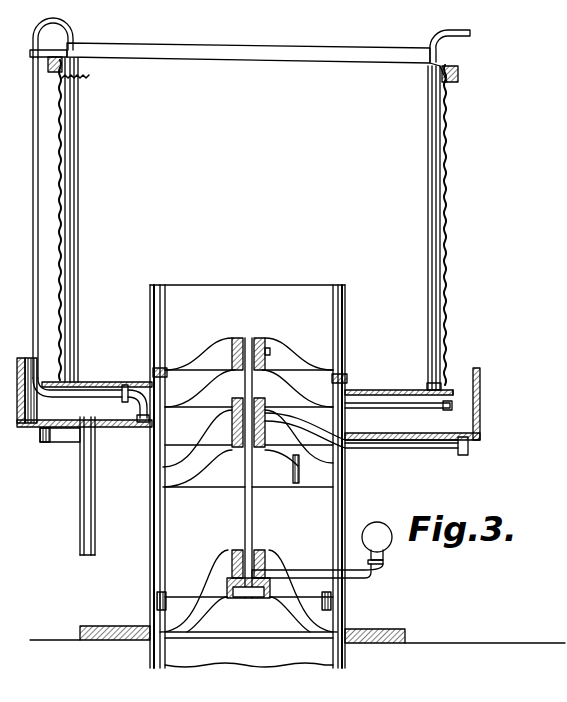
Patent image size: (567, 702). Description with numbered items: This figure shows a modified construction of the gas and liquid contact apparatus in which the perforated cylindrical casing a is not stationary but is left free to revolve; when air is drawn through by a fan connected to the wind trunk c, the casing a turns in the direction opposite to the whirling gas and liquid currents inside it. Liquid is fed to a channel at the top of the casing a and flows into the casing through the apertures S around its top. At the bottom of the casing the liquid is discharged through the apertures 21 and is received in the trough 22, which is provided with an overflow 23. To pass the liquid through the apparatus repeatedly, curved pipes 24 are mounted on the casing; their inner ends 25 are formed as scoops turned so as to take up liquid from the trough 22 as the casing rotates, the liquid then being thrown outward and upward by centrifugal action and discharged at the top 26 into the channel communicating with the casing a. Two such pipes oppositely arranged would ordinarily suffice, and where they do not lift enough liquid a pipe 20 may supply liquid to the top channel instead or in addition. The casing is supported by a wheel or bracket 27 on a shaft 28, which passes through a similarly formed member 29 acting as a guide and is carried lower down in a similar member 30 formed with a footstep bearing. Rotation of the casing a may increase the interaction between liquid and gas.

The supply pipe 20 is at (462, 36).
The discharge apertures 21 is at (58, 378).
The trough 22 is at (481, 395).
The overflow 23 is at (84, 470).
The curved pipes 24 is at (33, 206).
The inner ends 25 is at (143, 425).
The top 26 is at (70, 50).
The wheel or bracket 27 is at (278, 374).
The shaft 28 is at (248, 512).
The guide member 29 is at (200, 470).
The footstep bearing member 30 is at (217, 586).
The casing a is at (66, 216).
The apertures S is at (70, 64).
The wind trunk c is at (357, 522).